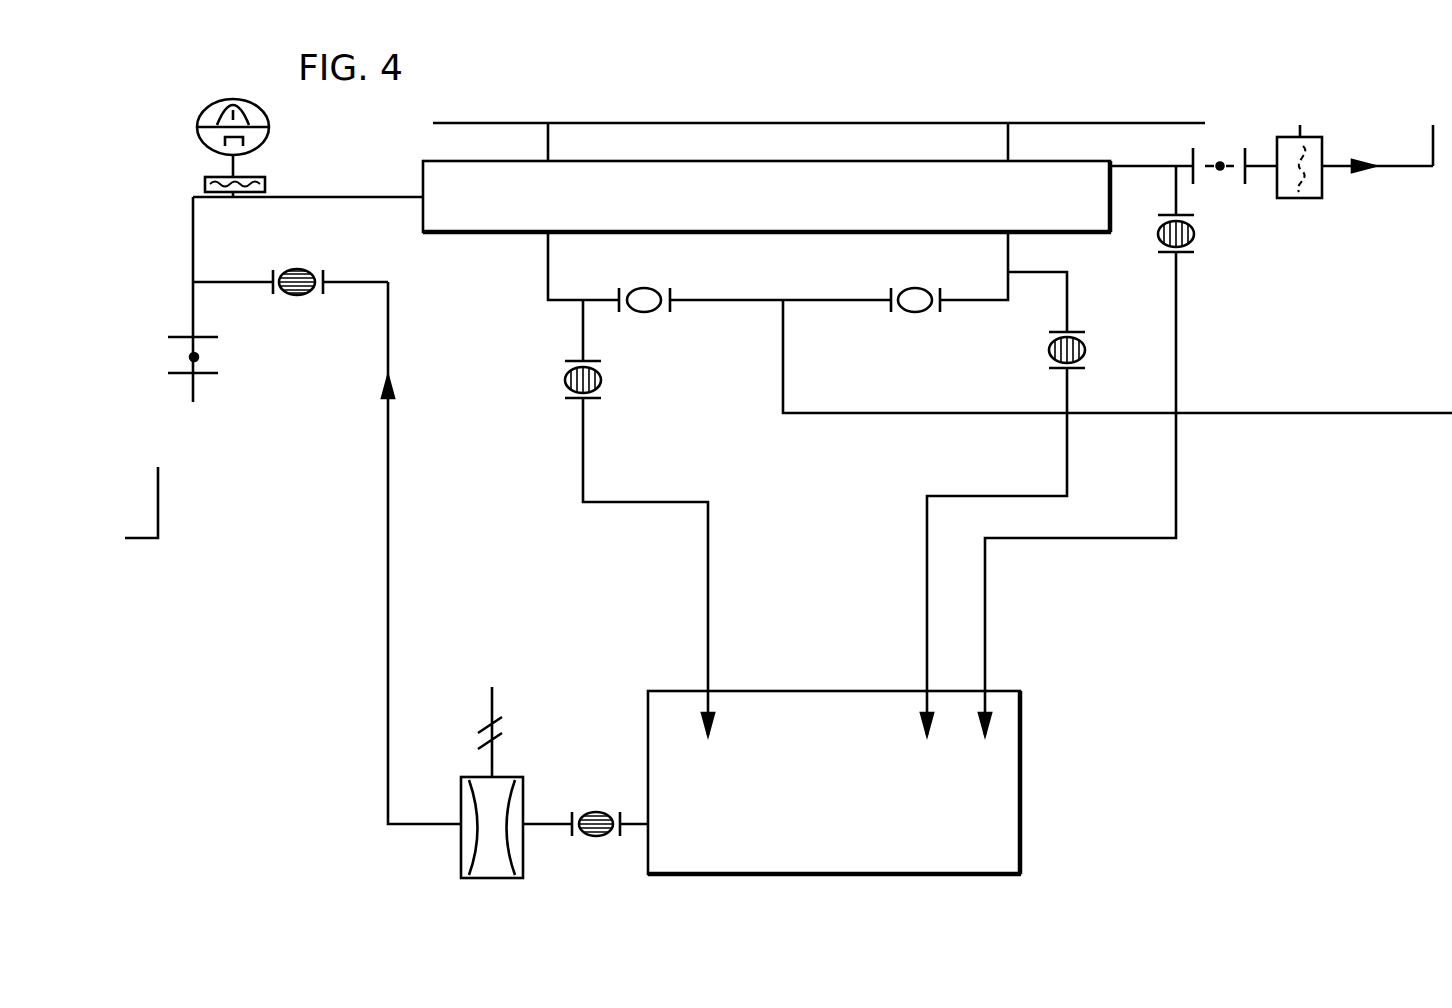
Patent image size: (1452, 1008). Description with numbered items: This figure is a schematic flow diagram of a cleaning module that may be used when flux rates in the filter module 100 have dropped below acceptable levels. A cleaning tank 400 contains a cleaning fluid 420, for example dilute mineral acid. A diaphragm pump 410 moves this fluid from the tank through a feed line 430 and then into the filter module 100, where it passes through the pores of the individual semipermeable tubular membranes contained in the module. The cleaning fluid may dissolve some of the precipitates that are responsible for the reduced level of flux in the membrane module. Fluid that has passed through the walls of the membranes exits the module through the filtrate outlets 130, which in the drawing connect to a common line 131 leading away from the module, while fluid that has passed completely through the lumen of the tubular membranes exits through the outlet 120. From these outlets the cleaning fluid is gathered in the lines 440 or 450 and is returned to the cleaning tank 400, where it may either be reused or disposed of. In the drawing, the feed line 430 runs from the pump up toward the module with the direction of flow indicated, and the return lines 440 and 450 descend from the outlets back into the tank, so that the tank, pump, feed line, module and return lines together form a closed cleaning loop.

The filter module 100 is at (423, 178).
The outlet 120 is at (1120, 164).
The filtrate outlets 130 is at (548, 243).
The vapor line 131 is at (783, 362).
The cleaning tank 400 is at (1021, 780).
The diaphragm pump 410 is at (490, 878).
The cleaning fluid 420 is at (1000, 826).
The feed line 430 is at (388, 547).
The line 440 is at (583, 340).
The line 450 is at (1176, 300).